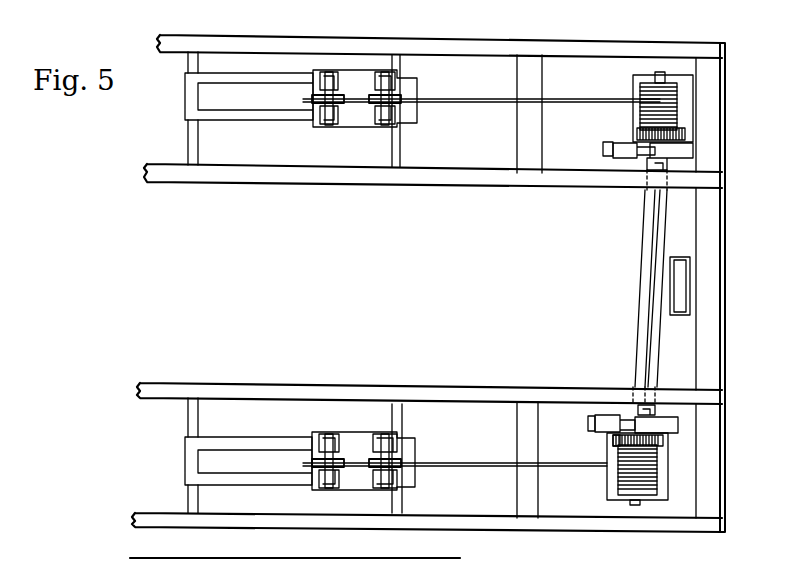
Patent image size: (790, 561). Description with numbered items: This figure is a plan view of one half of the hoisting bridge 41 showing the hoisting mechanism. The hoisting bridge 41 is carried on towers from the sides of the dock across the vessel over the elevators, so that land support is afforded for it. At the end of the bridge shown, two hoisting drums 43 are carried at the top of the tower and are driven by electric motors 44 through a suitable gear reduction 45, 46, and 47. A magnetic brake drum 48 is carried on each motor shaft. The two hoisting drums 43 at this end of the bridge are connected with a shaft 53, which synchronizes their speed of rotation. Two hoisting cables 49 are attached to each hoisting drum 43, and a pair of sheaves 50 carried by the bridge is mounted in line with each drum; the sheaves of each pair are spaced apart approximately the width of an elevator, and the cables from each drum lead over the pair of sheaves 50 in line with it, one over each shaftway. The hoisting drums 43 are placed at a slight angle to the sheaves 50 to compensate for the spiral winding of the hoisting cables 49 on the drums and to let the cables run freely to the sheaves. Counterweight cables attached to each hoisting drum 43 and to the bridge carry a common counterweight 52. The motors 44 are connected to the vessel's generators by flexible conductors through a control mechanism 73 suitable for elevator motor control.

The hoisting bridge 41 is at (720, 90).
The hoisting drum 43 is at (637, 93).
The electric motor 44 is at (613, 152).
The gear reduction 45 is at (688, 160).
The gear reduction 46 is at (657, 443).
The gear reduction 47 is at (615, 441).
The magnetic brake drum 48 is at (607, 142).
The hoisting cable 49 is at (513, 101).
The sheave 50 is at (340, 108).
The counterweight 52 is at (640, 298).
The shaft 53 is at (649, 372).
The control mechanism 73 is at (677, 315).